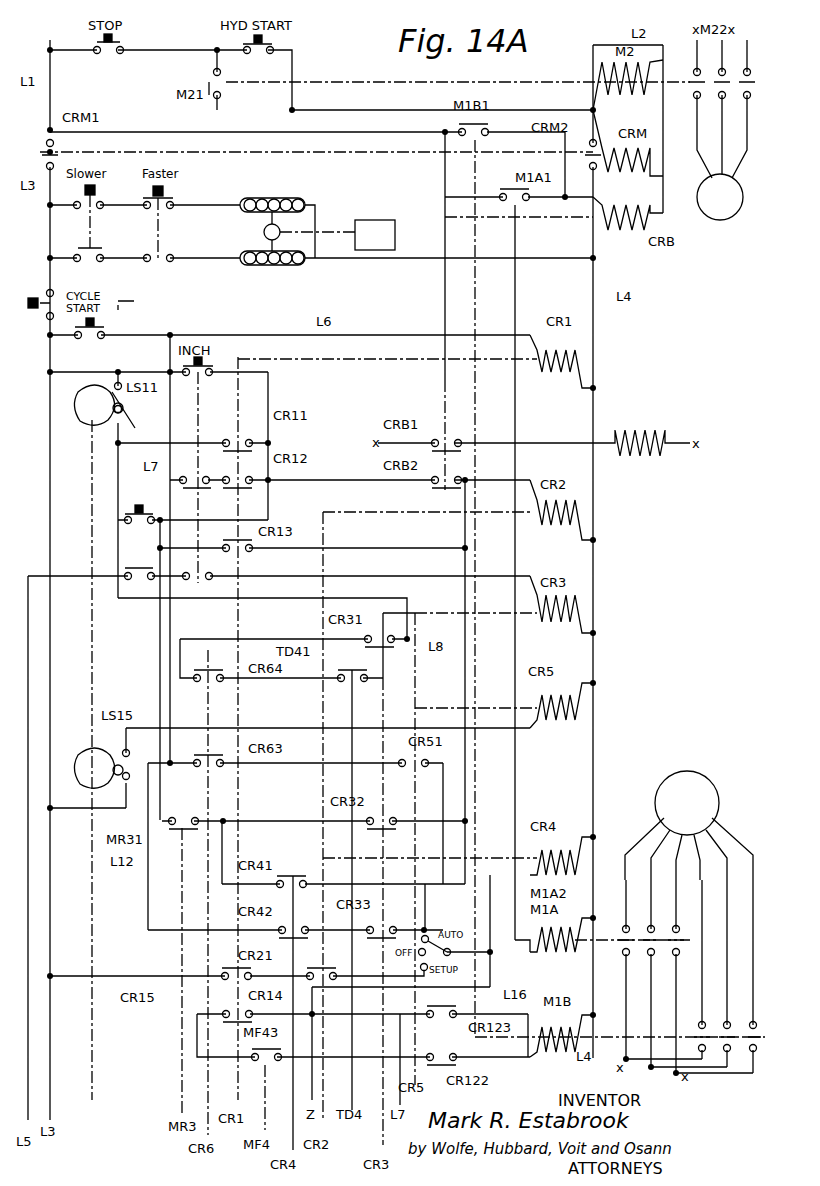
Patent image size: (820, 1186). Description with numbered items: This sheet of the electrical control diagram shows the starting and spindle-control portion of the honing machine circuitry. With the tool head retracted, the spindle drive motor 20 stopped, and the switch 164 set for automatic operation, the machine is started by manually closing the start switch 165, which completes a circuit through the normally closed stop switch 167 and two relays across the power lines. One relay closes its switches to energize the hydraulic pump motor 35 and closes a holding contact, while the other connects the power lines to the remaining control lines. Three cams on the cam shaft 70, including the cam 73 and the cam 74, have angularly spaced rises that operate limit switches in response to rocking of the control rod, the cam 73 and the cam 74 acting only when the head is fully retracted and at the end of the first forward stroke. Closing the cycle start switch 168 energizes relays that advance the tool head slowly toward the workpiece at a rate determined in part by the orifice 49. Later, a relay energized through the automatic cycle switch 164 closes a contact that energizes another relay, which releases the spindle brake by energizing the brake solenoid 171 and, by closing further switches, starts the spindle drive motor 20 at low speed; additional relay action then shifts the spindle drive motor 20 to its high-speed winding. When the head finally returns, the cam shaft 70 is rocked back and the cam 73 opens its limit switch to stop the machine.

The stop switch 167 is at (115, 55).
The start switch 165 is at (276, 51).
The orifice 49 is at (368, 220).
The hydraulic pump motor 35 is at (735, 213).
The cycle start switch 168 is at (106, 334).
The cam 73 is at (82, 412).
The brake solenoid 171 is at (640, 428).
The cam shaft 70 is at (92, 668).
The cam 74 is at (80, 756).
The spindle drive motor 20 is at (703, 788).
The automatic cycle switch 164 is at (452, 957).